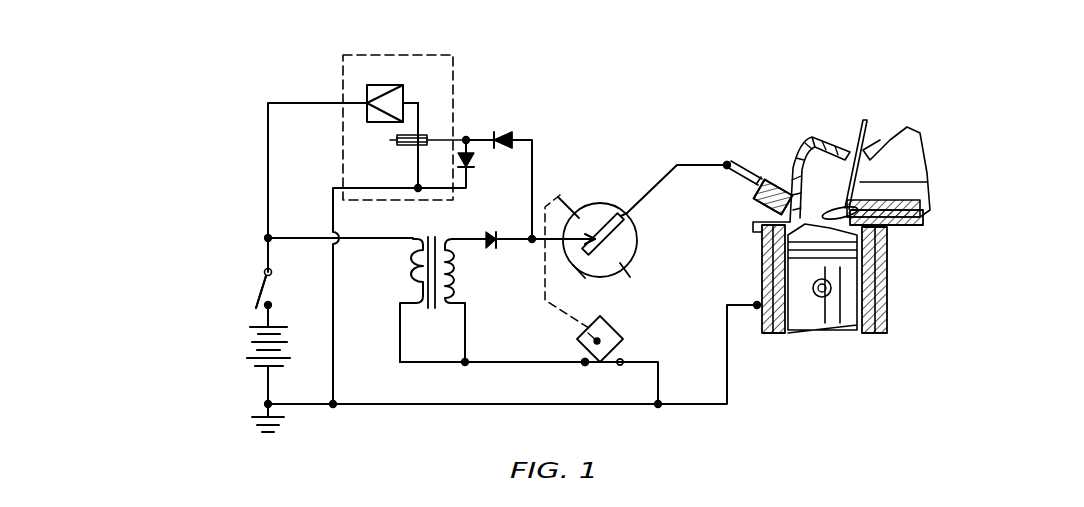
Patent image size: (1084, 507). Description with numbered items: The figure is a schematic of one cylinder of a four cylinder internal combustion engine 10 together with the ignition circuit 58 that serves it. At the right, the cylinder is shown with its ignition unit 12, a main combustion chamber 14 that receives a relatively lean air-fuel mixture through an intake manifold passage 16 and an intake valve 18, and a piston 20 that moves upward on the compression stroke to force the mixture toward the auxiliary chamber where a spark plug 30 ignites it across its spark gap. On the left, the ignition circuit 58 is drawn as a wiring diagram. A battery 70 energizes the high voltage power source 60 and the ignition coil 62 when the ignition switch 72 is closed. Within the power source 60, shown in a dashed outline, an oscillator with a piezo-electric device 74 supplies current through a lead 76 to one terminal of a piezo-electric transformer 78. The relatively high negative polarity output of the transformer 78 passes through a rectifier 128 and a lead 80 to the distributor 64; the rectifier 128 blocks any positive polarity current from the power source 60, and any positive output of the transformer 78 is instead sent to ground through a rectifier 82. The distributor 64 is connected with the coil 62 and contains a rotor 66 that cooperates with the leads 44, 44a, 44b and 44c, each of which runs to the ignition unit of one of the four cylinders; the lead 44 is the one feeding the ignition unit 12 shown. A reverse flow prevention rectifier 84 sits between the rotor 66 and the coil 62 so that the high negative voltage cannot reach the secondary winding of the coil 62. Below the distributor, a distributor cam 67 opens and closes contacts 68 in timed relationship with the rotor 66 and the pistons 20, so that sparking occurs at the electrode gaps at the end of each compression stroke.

The internal combustion engine 10 is at (874, 82).
The ignition unit 12 is at (753, 162).
The main combustion chamber 14 is at (873, 243).
The intake manifold passage 16 is at (930, 190).
The intake valve 18 is at (857, 200).
The piston 20 is at (857, 300).
The spark plug 30 is at (756, 192).
The lead 44 is at (700, 165).
The lead 44a is at (568, 197).
The lead 44b is at (560, 292).
The lead 44c is at (632, 277).
The ignition circuit 58 is at (613, 105).
The power source 60 is at (448, 55).
The ignition coil 62 is at (437, 236).
The distributor 64 is at (637, 237).
The rotor 66 is at (621, 210).
The distributor cam 67 is at (615, 327).
The contacts 68 is at (590, 366).
The battery 70 is at (256, 343).
The ignition switch 72 is at (257, 292).
The oscillator with a piezo-electric device 74 is at (389, 85).
The lead 76 is at (425, 108).
The piezo-electric transformer 78 is at (400, 145).
The lead 80 is at (532, 136).
The rectifier 82 is at (470, 167).
The reverse flow prevention rectifier 84 is at (492, 250).
The rectifier 128 is at (503, 131).